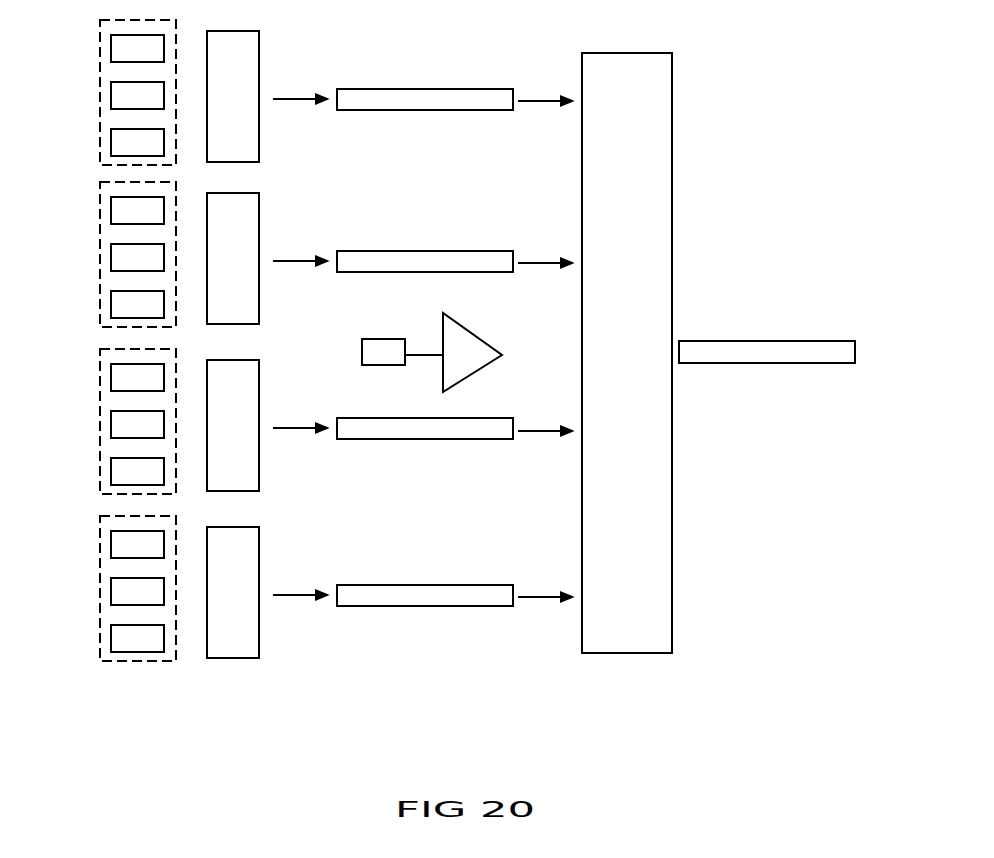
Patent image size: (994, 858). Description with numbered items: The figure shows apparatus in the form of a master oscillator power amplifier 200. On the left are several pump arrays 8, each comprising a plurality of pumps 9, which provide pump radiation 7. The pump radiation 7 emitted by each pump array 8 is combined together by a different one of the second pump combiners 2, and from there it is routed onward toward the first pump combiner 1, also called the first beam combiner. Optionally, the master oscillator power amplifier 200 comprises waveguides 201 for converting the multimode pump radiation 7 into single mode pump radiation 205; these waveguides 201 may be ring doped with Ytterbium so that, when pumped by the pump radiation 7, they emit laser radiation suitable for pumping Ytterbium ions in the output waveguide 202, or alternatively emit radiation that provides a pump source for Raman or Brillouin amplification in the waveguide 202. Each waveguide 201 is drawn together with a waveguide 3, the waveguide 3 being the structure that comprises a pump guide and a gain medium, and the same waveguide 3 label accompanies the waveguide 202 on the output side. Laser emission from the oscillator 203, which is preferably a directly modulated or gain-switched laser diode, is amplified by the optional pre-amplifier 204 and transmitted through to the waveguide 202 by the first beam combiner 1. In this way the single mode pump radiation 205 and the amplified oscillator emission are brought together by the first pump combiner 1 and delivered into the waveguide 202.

The first pump combiner 1 is at (638, 53).
The second pump combiner 2 is at (248, 31).
The waveguide 3 is at (596, 324).
The pump radiation 7 is at (297, 98).
The pump array 8 is at (100, 23).
The pump 9 is at (111, 55).
The master oscillator power amplifier 200 is at (735, 651).
The waveguide for converting pump radiation 201 is at (377, 89).
The waveguide 202 is at (710, 341).
The oscillator 203 is at (377, 339).
The pre-amplifier 204 is at (478, 335).
The single mode pump radiation 205 is at (542, 98).